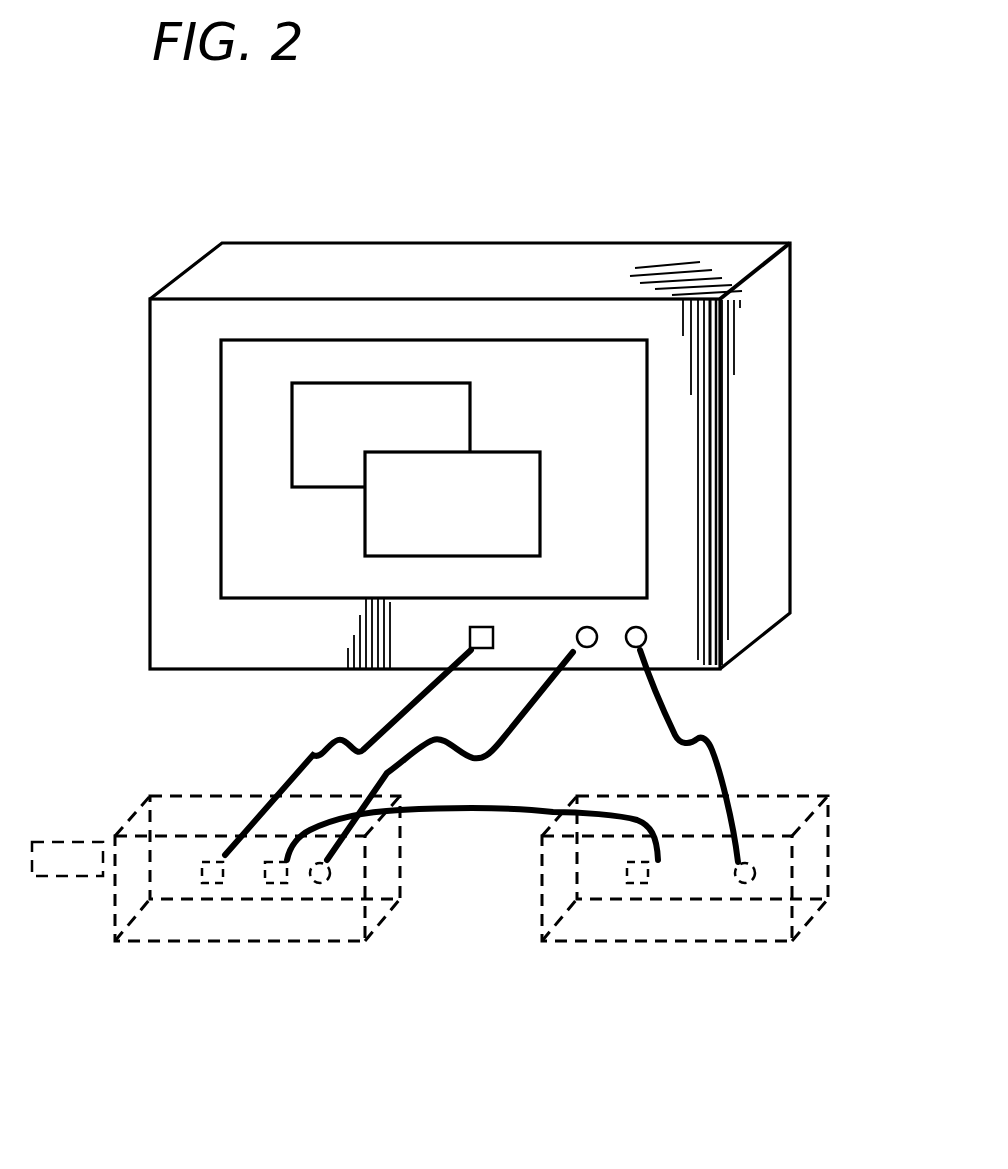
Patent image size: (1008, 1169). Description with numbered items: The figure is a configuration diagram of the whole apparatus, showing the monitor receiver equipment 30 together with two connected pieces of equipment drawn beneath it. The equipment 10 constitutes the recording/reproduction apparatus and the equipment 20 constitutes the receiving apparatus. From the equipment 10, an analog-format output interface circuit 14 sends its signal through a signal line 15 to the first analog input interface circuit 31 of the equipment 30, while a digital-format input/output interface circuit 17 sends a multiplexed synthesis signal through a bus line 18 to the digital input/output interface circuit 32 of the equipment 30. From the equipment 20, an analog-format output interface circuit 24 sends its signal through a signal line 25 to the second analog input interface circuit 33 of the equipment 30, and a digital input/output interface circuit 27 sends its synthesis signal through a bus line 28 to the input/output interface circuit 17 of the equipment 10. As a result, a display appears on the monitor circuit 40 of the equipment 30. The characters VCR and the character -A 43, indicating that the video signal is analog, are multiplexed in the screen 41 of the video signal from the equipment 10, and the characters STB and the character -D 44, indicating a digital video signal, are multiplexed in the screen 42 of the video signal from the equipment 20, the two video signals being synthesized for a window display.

The equipment 10 is at (130, 818).
The output interface circuit 14 is at (317, 884).
The signal line 15 is at (382, 783).
The input/output interface circuit 17 is at (80, 863).
The bus line 18 is at (287, 787).
The equipment 20 is at (540, 913).
The output interface circuit 24 is at (737, 886).
The signal line 25 is at (727, 777).
The input/output interface circuit 27 is at (627, 887).
The bus line 28 is at (495, 806).
The equipment 30 is at (150, 400).
The first input interface circuit 31 is at (595, 628).
The input/output interface circuit 32 is at (493, 627).
The second input interface circuit 33 is at (640, 626).
The monitor circuit 40 is at (221, 542).
The screen 41 is at (543, 510).
The screen 42 is at (315, 383).
The character -A 43 is at (512, 473).
The character -D 44 is at (400, 402).